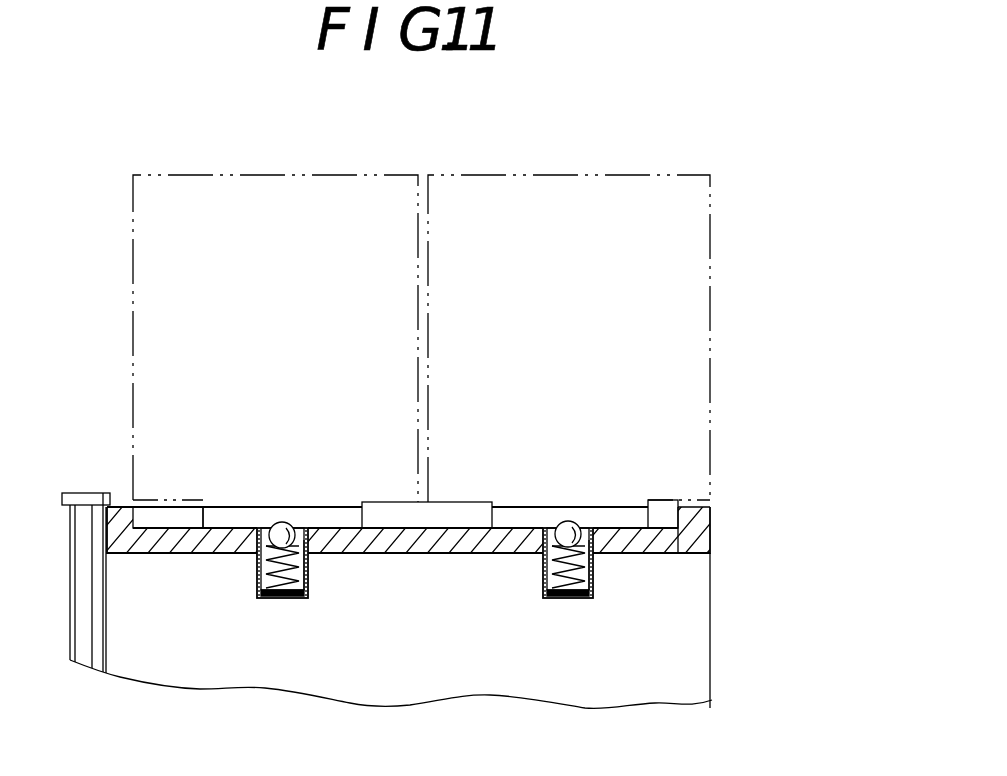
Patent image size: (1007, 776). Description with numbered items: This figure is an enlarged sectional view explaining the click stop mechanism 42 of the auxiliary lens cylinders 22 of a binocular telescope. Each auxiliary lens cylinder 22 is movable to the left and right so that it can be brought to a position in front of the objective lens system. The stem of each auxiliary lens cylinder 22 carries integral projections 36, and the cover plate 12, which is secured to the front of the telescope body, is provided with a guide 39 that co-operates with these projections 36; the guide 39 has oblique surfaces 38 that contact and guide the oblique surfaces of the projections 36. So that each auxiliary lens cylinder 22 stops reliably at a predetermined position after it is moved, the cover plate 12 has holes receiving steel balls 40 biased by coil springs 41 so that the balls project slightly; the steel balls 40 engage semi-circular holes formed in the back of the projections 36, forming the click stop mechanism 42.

The cover plate 12 is at (414, 547).
The auxiliary lens cylinder 22 is at (252, 233).
The projection 36 is at (228, 517).
The oblique surface 38 is at (158, 520).
The guide 39 is at (707, 522).
The steel ball 40 is at (278, 524).
The coil spring 41 is at (285, 598).
The click stop mechanism 42 is at (306, 557).